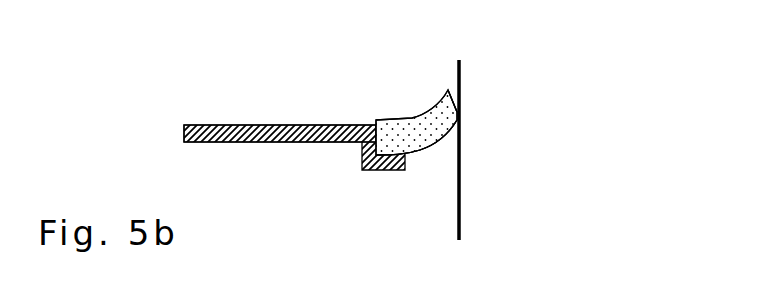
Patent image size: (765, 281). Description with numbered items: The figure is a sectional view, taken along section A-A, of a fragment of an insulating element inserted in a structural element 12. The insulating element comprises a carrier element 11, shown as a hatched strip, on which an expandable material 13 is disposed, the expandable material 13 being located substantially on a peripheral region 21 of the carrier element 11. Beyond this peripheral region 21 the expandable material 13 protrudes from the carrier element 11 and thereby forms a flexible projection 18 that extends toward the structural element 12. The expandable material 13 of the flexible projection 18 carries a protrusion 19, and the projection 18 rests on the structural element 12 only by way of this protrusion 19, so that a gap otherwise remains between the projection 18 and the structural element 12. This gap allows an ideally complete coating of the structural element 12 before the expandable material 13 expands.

The carrier element 11 is at (215, 142).
The expandable material 13 is at (388, 120).
The peripheral region 21 is at (372, 171).
The flexible projection 18 is at (427, 148).
The protrusion 19 is at (460, 110).
The structural element 12 is at (460, 200).